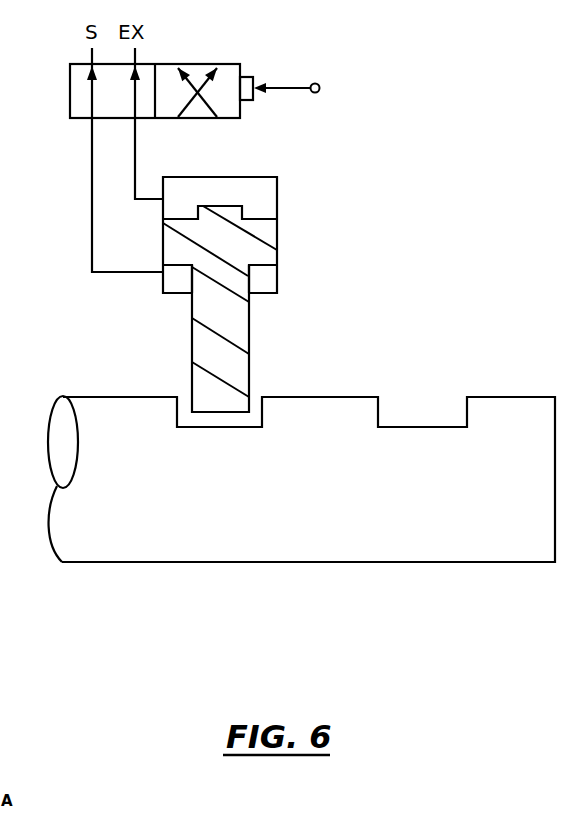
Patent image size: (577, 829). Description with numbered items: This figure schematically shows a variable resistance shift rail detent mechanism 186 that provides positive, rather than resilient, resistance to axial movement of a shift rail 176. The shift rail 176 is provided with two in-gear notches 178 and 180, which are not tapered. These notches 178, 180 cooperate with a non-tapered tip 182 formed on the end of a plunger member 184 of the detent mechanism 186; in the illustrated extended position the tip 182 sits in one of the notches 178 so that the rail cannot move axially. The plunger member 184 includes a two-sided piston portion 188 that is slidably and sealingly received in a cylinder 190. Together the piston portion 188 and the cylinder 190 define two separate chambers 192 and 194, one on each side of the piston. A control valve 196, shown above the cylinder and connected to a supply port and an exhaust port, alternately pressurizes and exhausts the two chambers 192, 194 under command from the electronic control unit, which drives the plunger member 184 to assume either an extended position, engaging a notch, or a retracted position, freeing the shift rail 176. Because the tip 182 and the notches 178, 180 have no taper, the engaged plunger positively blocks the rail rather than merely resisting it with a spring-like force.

The shift rail 176 is at (287, 520).
The in-gear notch 178 is at (220, 427).
The in-gear notch 180 is at (437, 427).
The non-tapered tip 182 is at (203, 397).
The plunger member 184 is at (227, 367).
The detent mechanism 186 is at (271, 323).
The piston portion 188 is at (220, 235).
The cylinder 190 is at (278, 206).
The chamber 192 is at (262, 279).
The chamber 194 is at (177, 200).
The control valve 196 is at (215, 56).